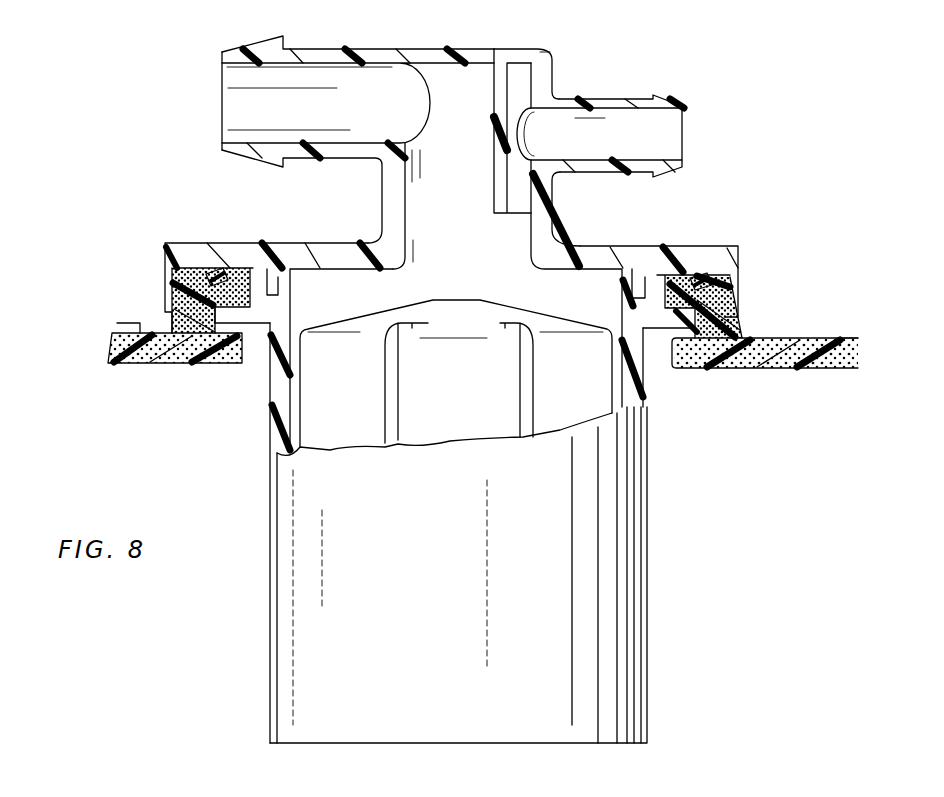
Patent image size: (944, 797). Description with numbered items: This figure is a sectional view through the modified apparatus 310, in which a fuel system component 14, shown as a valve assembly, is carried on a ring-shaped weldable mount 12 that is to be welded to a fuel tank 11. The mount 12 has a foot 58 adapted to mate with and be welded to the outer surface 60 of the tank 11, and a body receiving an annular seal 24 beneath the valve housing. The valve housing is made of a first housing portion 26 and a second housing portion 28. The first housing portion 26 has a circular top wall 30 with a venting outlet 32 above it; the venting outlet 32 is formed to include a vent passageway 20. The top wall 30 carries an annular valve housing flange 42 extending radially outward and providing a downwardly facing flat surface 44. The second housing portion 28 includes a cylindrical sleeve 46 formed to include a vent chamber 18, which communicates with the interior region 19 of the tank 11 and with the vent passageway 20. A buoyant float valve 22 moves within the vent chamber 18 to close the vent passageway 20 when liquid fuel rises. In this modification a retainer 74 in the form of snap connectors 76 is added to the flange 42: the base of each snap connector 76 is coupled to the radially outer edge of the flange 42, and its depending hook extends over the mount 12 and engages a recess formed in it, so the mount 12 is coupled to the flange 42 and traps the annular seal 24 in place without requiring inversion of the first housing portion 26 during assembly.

The fuel tank 11 is at (142, 356).
The weldable mount 12 is at (754, 327).
The fuel system component 14 is at (667, 221).
The vent chamber 18 is at (547, 298).
The interior region 19 is at (822, 392).
The vent passageway 20 is at (408, 218).
The float valve 22 is at (452, 413).
The annular seal 24 is at (689, 283).
The first housing portion 26 is at (569, 49).
The second housing portion 28 is at (661, 631).
The circular top wall 30 is at (185, 236).
The venting outlet 32 is at (417, 49).
The annular valve housing flange 42 is at (208, 253).
The downwardly facing flat surface 44 is at (187, 267).
The cylindrical sleeve 46 is at (268, 420).
The foot 58 is at (190, 328).
The outer surface 60 is at (117, 323).
The retainer 74 is at (168, 296).
The snap connectors 76 is at (162, 270).
The apparatus 310 is at (634, 81).